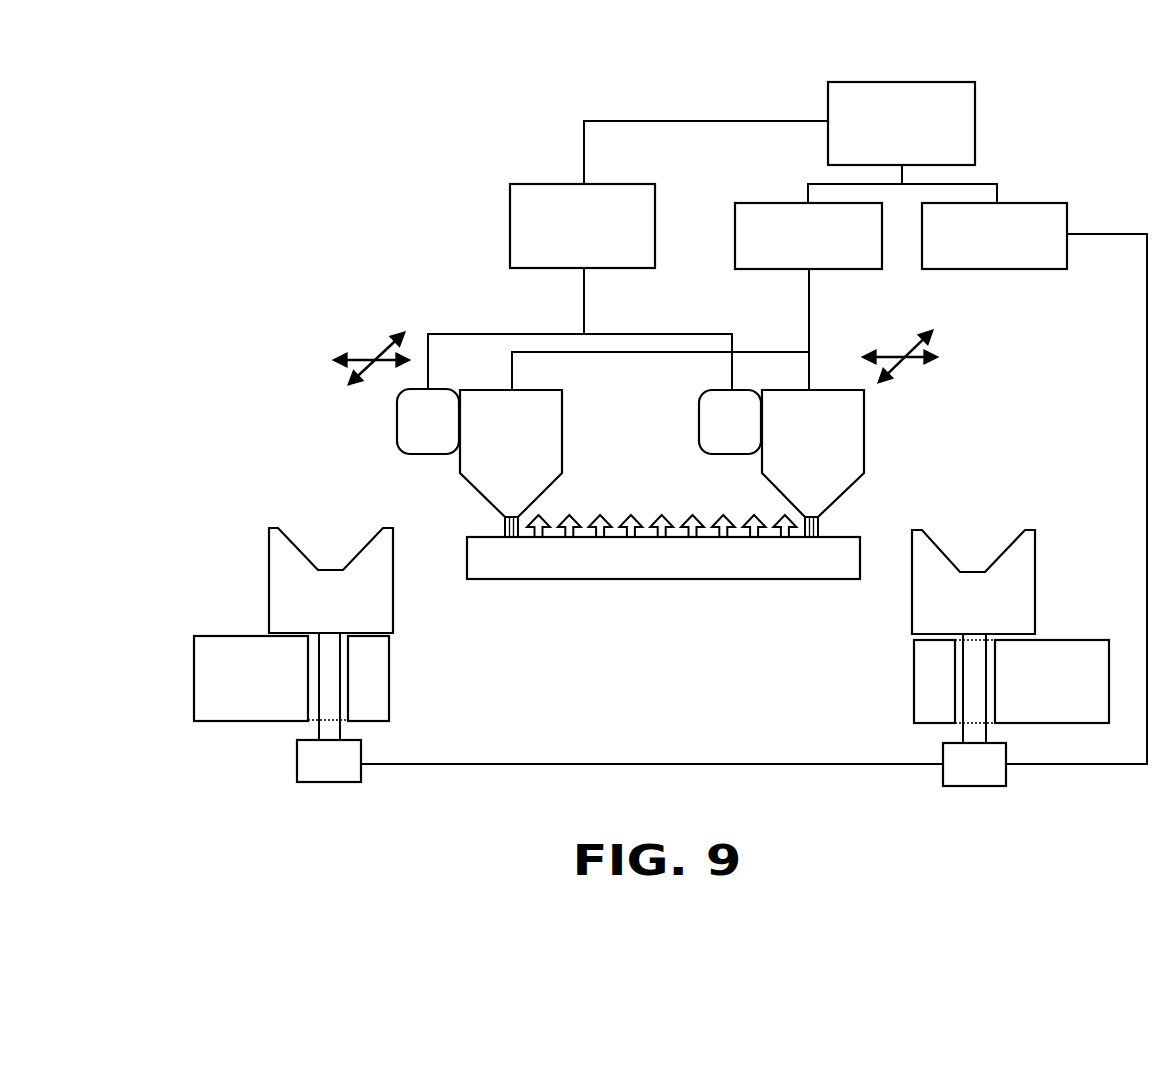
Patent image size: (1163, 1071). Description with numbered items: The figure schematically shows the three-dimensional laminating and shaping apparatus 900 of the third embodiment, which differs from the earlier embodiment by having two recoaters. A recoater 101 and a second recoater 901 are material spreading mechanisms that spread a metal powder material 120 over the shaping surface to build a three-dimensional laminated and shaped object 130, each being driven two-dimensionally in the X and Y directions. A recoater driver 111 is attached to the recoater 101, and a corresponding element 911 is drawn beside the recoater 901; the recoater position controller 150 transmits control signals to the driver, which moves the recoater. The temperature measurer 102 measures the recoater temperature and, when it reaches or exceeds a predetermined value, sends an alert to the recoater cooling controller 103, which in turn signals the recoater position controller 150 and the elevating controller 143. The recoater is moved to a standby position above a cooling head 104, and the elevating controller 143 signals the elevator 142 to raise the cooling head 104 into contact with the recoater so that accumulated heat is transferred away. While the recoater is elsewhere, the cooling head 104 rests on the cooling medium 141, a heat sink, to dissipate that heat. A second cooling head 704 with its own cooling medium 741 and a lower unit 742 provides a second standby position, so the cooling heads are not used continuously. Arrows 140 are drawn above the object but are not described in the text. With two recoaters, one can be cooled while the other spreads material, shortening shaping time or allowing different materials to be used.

The three-dimensional laminating and shaping apparatus 900 is at (355, 150).
The recoater cooling controller 103 is at (900, 82).
The recoater position controller 150 is at (543, 184).
The temperature measurer 102 is at (770, 203).
The elevating controller 143 is at (1024, 203).
The second recoater cooling unit 911 is at (397, 420).
The recoater 901 is at (562, 423).
The recoater driver 111 is at (699, 418).
The recoater 101 is at (864, 425).
The material 120 is at (505, 520).
The heater 140 is at (660, 512).
The three-dimensional laminated and shaped object 130 is at (612, 580).
The cooling head 704 is at (269, 580).
The cooling head 104 is at (1035, 578).
The cooling medium 741 is at (389, 677).
The cooling medium 141 is at (914, 674).
The second drive unit 742 is at (297, 760).
The elevator 142 is at (1006, 775).